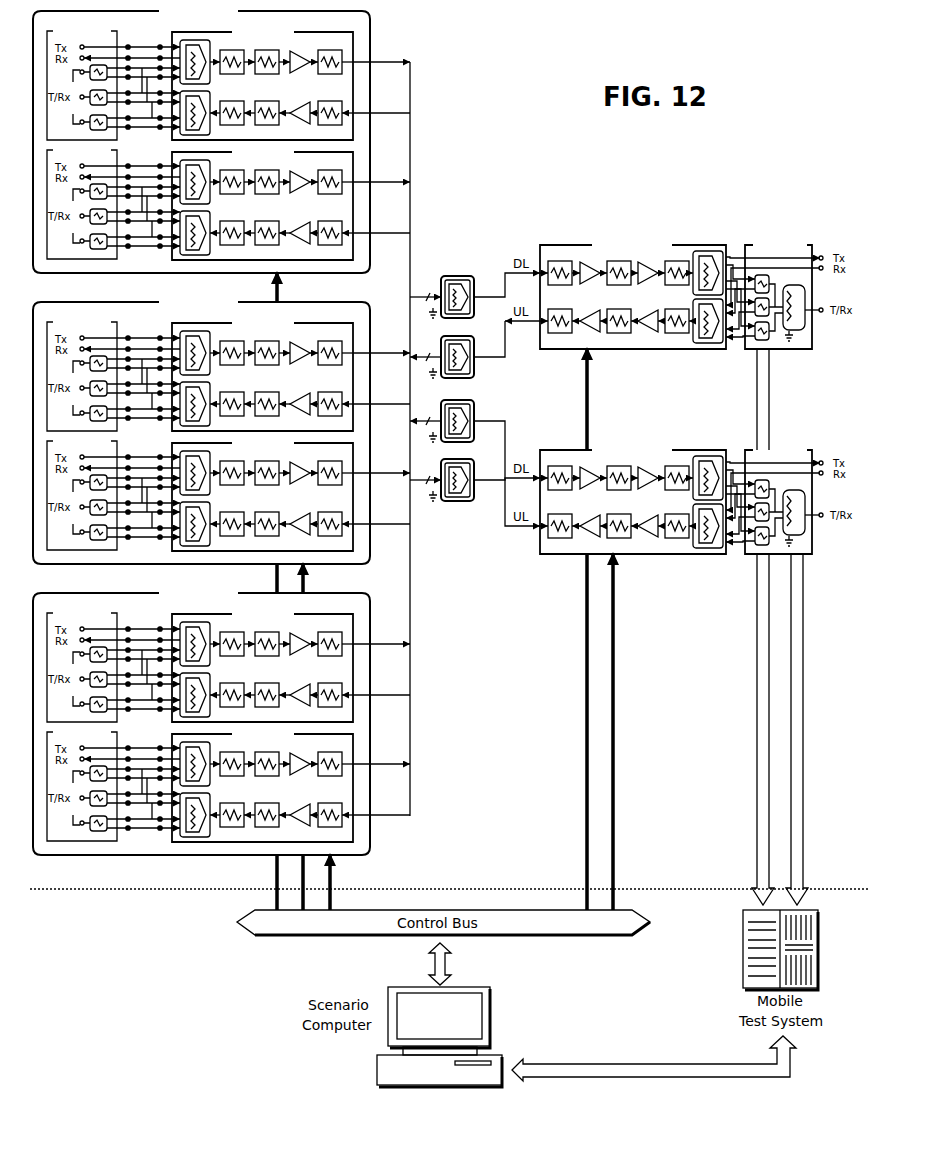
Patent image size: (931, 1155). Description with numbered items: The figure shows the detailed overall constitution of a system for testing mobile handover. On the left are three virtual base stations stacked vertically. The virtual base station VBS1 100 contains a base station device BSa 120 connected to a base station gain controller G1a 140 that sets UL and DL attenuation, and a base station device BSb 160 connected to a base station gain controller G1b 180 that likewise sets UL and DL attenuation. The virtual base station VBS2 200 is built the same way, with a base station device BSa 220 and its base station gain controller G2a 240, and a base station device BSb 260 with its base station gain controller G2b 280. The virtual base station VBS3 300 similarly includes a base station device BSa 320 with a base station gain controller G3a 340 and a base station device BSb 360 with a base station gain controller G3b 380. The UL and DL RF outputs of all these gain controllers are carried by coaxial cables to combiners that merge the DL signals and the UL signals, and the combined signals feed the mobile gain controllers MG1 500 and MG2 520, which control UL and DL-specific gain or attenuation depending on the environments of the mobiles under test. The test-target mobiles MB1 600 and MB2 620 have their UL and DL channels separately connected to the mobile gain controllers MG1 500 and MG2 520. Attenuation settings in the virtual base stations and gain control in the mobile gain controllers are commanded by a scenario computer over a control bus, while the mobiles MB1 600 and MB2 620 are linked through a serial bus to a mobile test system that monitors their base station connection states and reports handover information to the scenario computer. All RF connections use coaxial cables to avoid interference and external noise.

The virtual base station VBS1 100 is at (221, 138).
The base station device BSa 120 is at (113, 82).
The base station gain controller G1a 140 is at (262, 83).
The base station device BSb 160 is at (113, 201).
The base station gain controller G1b 180 is at (262, 203).
The virtual base station VBS2 200 is at (221, 429).
The base station device BSa 220 is at (113, 373).
The base station gain controller G2a 240 is at (262, 374).
The base station device BSb 260 is at (113, 492).
The base station gain controller G2b 280 is at (262, 494).
The virtual base station VBS3 300 is at (221, 720).
The base station device BSa 320 is at (113, 664).
The base station gain controller G3a 340 is at (262, 665).
The base station device BSb 360 is at (113, 783).
The base station gain controller G3b 380 is at (262, 785).
The mobile gain controller MG1 500 is at (633, 294).
The mobile gain controller MG2 520 is at (633, 499).
The test-target mobile MB1 600 is at (789, 294).
The test-target mobile MB2 620 is at (789, 499).